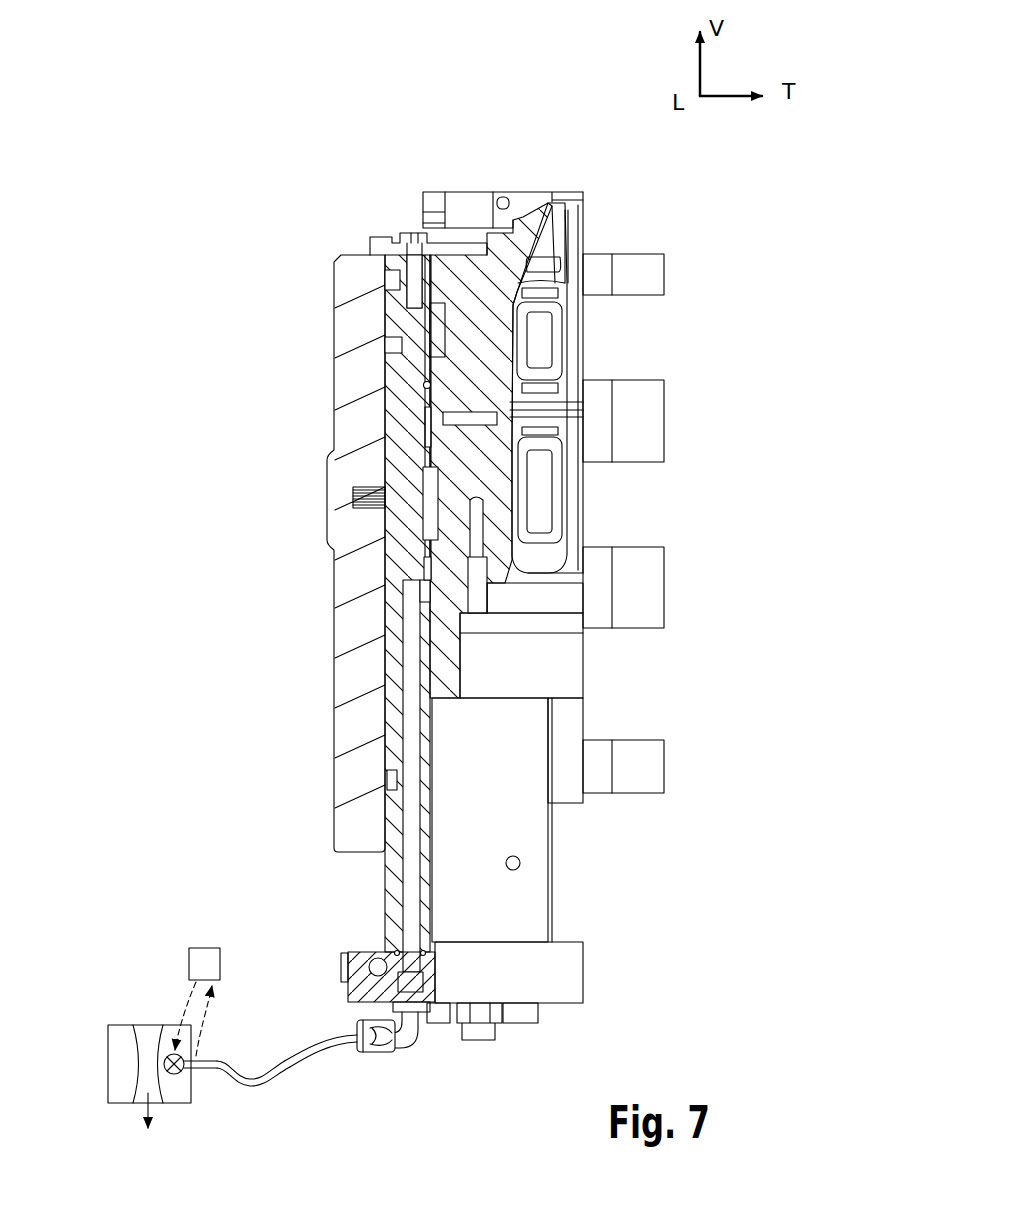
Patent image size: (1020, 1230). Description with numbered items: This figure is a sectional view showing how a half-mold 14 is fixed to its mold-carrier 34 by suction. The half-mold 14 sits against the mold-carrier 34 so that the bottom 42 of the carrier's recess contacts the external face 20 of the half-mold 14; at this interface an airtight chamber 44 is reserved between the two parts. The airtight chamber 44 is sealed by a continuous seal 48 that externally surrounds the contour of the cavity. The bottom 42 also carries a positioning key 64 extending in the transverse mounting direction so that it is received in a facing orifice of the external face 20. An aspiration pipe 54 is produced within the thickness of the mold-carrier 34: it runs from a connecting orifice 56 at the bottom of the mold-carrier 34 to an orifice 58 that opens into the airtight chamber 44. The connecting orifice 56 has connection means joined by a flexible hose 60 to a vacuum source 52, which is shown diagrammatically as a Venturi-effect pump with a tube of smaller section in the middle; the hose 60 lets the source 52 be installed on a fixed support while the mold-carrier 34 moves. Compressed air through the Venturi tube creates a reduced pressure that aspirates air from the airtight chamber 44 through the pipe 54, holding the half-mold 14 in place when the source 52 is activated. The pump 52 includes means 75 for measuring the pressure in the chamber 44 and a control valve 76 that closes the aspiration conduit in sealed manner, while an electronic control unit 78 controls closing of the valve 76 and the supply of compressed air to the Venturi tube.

The half-mold 14 is at (594, 222).
The external face 20 is at (420, 617).
The mold-carrier 34 is at (352, 238).
The bottom 42 is at (450, 647).
The airtight chamber 44 is at (427, 570).
The continuous seal 48 is at (423, 385).
The vacuum source 52 is at (122, 1063).
The aspiration pipe 54 is at (410, 868).
The connecting orifice 56 is at (412, 997).
The orifice 58 is at (423, 588).
The flexible hose 60 is at (257, 1082).
The positioning key 64 is at (430, 500).
The means for measuring the pressure 75 is at (196, 1057).
The control valve 76 is at (173, 1077).
The electronic control unit 78 is at (200, 960).